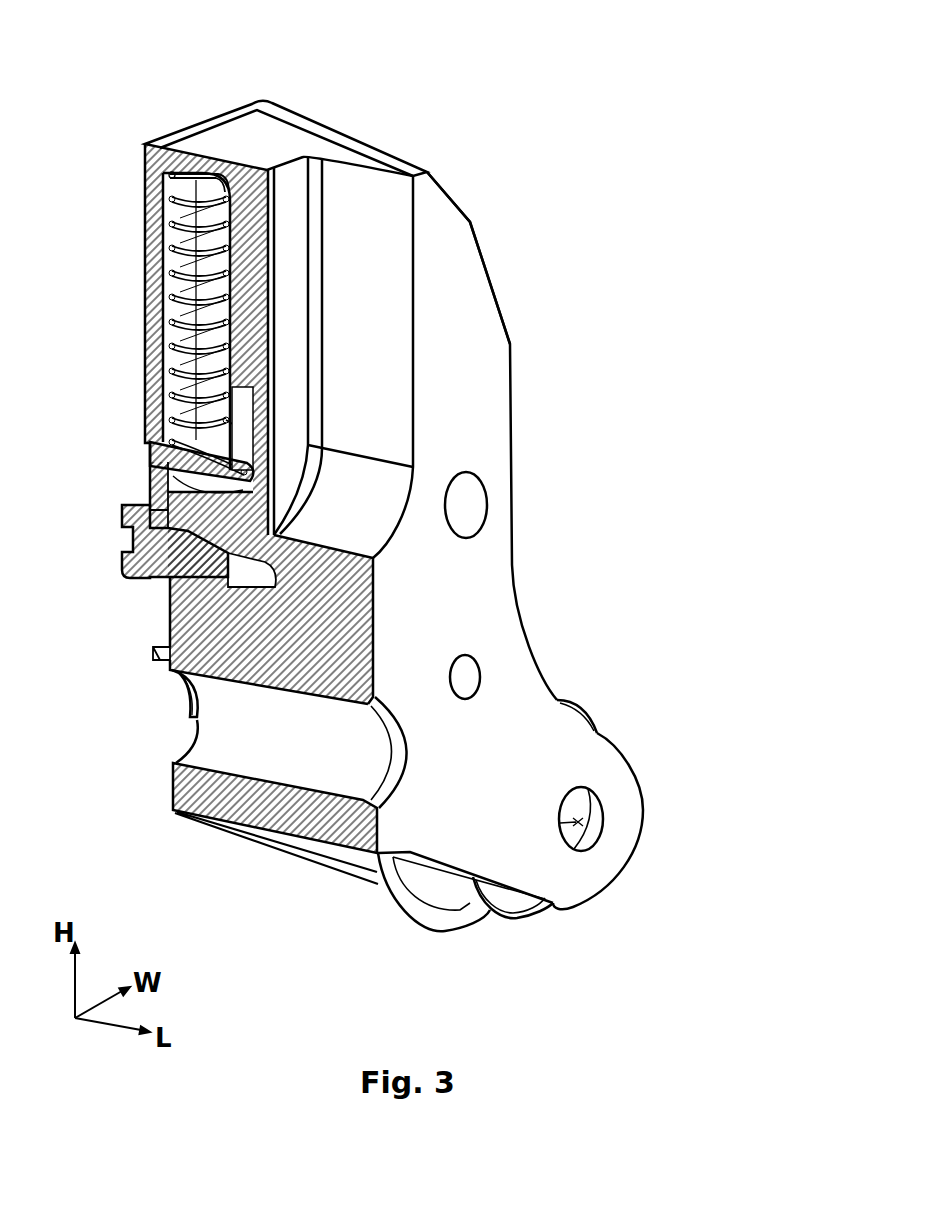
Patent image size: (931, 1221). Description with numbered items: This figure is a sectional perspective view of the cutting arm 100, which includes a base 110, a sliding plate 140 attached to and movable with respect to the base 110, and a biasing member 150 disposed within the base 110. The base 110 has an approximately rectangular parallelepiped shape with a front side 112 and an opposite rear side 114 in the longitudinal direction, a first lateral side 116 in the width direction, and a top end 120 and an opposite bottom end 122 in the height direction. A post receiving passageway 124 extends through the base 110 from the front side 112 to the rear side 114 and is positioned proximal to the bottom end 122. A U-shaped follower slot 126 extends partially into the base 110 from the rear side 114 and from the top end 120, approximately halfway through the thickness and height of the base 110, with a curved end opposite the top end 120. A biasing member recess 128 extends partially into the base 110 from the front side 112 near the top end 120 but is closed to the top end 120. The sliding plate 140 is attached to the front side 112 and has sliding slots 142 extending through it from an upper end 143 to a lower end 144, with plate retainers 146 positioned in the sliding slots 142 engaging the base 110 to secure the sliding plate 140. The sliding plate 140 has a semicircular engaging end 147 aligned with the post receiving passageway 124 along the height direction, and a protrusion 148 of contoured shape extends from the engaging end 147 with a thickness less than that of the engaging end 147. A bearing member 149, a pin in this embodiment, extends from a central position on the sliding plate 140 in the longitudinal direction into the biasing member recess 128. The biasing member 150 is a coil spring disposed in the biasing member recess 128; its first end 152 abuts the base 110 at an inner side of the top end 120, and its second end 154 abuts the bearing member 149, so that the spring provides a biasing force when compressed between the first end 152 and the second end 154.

The cutting arm 100 is at (141, 37).
The base 110 is at (533, 346).
The front side 112 is at (173, 790).
The rear side 114 is at (489, 609).
The first lateral side 116 is at (485, 260).
The top end 120 is at (280, 153).
The bottom end 122 is at (246, 833).
The post receiving passageway 124 is at (343, 772).
The follower slot 126 is at (358, 206).
The biasing member recess 128 is at (195, 306).
The sliding plate 140 is at (155, 127).
The sliding slots 142 is at (163, 609).
The upper end 143 is at (150, 507).
The lower end 144 is at (170, 642).
The plate retainers 146 is at (137, 547).
The engaging end 147 is at (163, 695).
The protrusion 148 is at (197, 723).
The bearing member 149 is at (157, 453).
The biasing member 150 is at (180, 257).
The first end 152 is at (168, 173).
The second end 154 is at (184, 430).